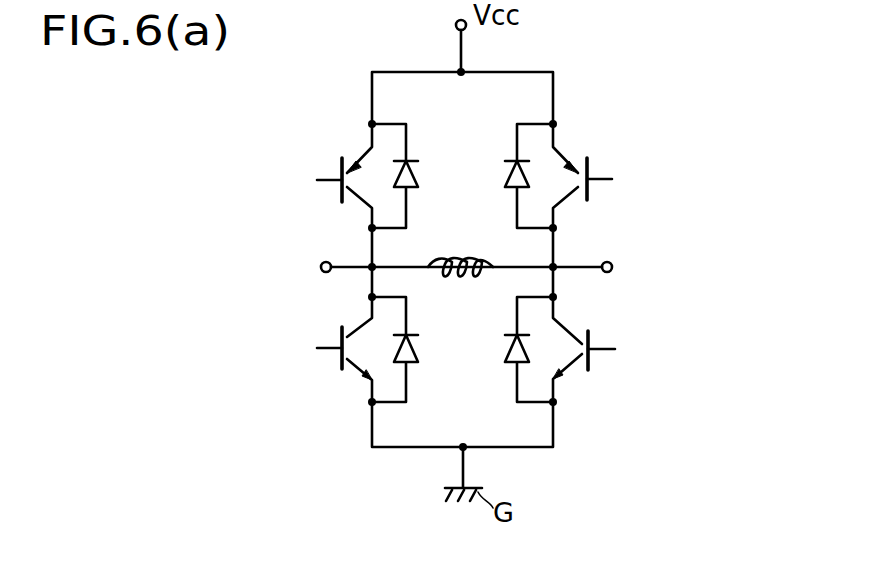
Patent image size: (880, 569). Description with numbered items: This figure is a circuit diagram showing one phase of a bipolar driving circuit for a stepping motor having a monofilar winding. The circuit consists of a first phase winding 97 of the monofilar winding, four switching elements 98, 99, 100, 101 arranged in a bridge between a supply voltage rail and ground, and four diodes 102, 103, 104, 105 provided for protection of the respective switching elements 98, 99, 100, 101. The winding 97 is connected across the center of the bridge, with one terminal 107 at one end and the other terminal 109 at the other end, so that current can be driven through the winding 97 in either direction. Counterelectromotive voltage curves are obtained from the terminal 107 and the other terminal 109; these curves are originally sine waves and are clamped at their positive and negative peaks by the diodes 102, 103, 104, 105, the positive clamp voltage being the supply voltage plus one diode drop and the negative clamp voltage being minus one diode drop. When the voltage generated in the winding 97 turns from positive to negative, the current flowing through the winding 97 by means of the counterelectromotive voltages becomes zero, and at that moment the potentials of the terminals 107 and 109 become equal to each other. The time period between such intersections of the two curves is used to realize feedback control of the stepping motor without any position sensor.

The first phase winding 97 is at (457, 257).
The switching element 98 is at (340, 162).
The switching element 99 is at (588, 174).
The switching element 100 is at (340, 360).
The switching element 101 is at (590, 372).
The diode 102 is at (418, 160).
The diode 103 is at (507, 160).
The diode 104 is at (420, 356).
The diode 105 is at (512, 364).
The terminal 107 is at (326, 261).
The terminal 109 is at (613, 254).